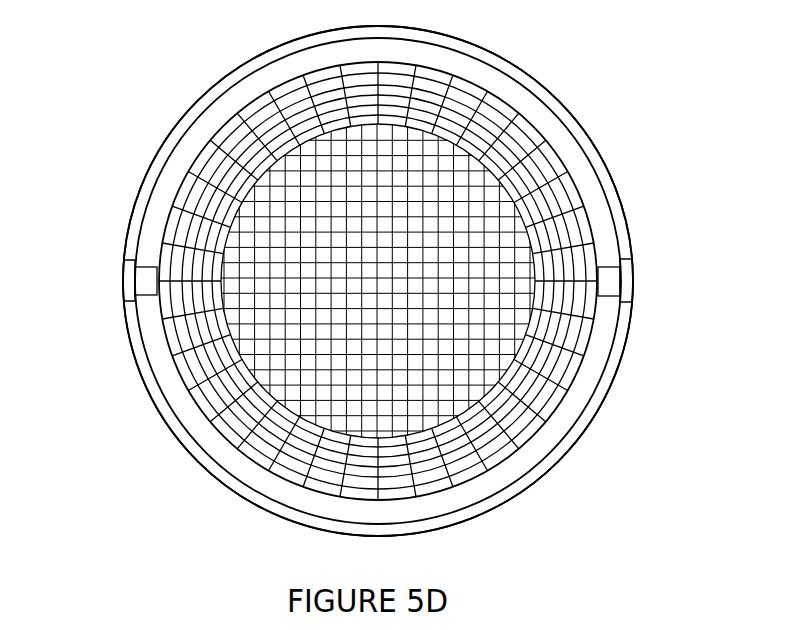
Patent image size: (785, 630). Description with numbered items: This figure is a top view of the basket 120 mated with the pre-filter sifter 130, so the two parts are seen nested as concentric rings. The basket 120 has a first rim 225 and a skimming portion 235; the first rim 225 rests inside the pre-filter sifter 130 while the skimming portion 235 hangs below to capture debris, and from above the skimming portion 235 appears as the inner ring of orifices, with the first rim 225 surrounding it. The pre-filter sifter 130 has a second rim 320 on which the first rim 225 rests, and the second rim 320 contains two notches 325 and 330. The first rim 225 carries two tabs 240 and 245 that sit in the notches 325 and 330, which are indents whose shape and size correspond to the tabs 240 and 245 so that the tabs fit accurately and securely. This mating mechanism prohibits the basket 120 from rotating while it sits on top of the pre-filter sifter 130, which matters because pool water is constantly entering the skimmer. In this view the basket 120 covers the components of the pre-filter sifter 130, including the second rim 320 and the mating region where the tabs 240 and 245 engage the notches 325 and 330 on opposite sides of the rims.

The basket 120 is at (578, 130).
The pre-filter sifter 130 is at (620, 172).
The first rim 225 is at (622, 230).
The notch 325 is at (628, 280).
The tab 240 is at (613, 287).
The skimming portion 235 is at (482, 445).
The second rim 320 is at (213, 473).
The tab 245 is at (143, 282).
The notch 330 is at (123, 290).